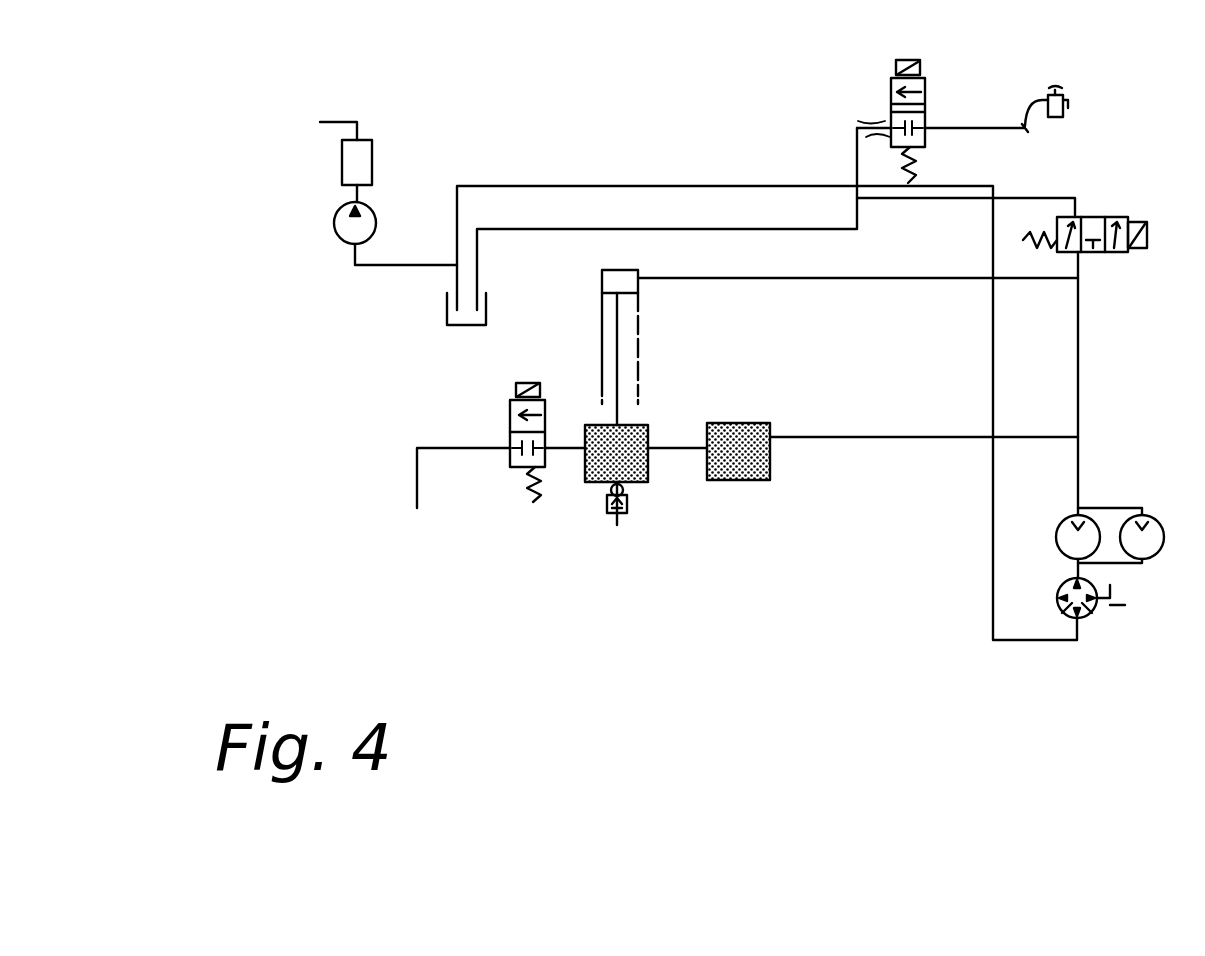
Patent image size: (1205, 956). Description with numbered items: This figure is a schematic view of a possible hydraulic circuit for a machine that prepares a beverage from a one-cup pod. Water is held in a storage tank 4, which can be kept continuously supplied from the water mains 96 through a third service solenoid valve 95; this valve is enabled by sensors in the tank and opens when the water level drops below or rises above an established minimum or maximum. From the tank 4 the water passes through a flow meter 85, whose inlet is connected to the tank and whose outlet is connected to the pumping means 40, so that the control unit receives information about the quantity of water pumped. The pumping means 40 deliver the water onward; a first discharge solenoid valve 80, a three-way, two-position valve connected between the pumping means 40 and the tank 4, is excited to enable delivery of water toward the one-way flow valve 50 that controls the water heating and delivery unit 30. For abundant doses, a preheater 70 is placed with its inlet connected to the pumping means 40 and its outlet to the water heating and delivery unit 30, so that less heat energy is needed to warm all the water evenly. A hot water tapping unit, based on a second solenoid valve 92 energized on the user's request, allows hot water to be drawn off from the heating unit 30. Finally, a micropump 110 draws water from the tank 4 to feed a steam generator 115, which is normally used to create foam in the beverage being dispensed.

The storage tank 4 is at (452, 314).
The water heating and delivery unit 30 is at (650, 483).
The pumping means 40 is at (1085, 527).
The one-way flow valve 50 is at (630, 280).
The preheater 70 is at (770, 475).
The first discharge solenoid valve 80 is at (1125, 210).
The flow meter 85 is at (1090, 608).
The second solenoid valve 92 is at (522, 460).
The third service solenoid valve 95 is at (893, 108).
The water mains 96 is at (1068, 96).
The micropump 110 is at (335, 235).
The steam generator 115 is at (350, 162).